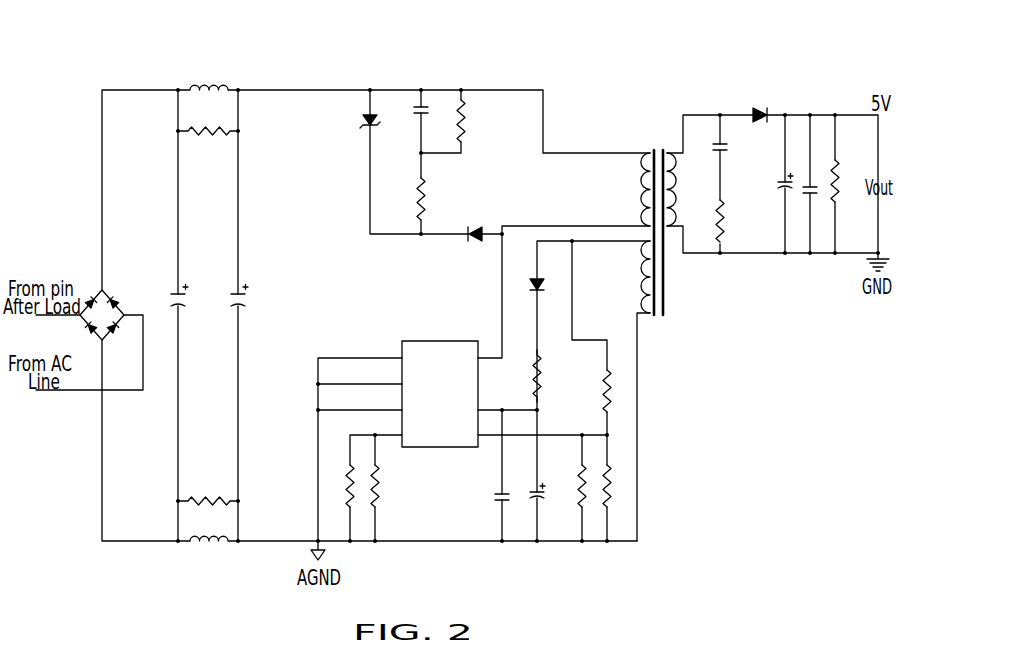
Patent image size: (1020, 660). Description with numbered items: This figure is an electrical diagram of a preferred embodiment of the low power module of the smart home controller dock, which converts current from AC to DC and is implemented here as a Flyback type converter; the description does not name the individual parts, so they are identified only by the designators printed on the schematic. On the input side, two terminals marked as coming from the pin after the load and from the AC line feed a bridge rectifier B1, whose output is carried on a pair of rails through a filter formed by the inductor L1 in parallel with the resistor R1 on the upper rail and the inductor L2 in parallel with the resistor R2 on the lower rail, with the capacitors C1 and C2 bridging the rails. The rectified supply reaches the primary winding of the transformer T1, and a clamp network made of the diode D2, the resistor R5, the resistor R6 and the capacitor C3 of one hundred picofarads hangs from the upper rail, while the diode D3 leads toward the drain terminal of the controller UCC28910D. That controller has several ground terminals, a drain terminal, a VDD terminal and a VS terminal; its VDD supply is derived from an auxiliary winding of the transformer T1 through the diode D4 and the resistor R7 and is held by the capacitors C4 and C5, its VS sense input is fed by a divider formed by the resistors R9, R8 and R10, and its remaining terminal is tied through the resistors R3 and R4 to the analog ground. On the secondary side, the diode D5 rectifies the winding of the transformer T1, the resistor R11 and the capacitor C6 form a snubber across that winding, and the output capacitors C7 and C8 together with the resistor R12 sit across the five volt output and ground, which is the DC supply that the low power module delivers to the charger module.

The inductor L1 is at (208, 79).
The resistor R1 is at (208, 121).
The resistor R2 is at (208, 491).
The inductor L2 is at (208, 531).
The capacitor C1 is at (188, 304).
The capacitor C2 is at (248, 304).
The bridge rectifier B1 is at (119, 310).
The zener diode D2 is at (382, 122).
The capacitor 100pF C3 is at (436, 119).
The resistor R6 is at (473, 120).
The resistor R5 is at (432, 198).
The diode D3 is at (477, 223).
The diode D4 is at (549, 286).
The resistor R7 is at (548, 376).
The resistor R9 is at (617, 391).
The transformer Trans3 T1 is at (663, 236).
The output diode D5 is at (759, 103).
The capacitor C6 is at (731, 148).
The resistor R11 is at (733, 221).
The output capacitor C7 is at (794, 183).
The output capacitor C8 is at (819, 193).
The load resistor R12 is at (847, 181).
The flyback controller IC UCC28910D is at (442, 409).
The resistor R3 is at (359, 486).
The resistor R4 is at (384, 486).
The capacitor C4 is at (511, 498).
The VDD capacitor C5 is at (547, 498).
The resistor R8 is at (591, 486).
The resistor R10 is at (620, 486).